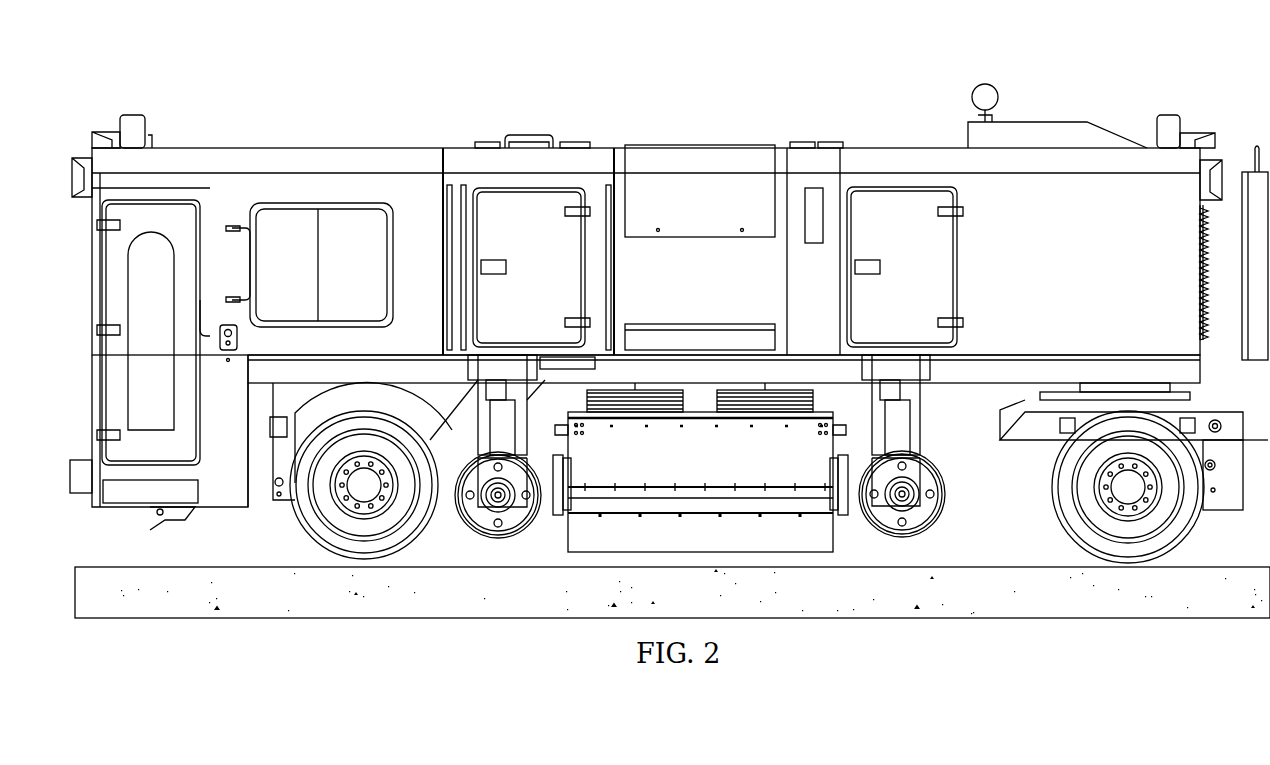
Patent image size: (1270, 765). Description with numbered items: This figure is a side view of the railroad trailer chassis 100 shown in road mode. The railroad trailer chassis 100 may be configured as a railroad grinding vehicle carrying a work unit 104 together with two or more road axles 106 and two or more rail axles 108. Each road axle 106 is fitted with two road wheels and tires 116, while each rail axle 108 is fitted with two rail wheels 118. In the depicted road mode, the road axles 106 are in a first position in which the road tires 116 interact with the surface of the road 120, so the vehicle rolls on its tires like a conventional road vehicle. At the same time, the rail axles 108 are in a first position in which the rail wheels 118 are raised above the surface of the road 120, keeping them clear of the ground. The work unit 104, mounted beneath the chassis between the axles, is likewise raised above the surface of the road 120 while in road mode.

The railroad trailer chassis 100 is at (669, 307).
The work unit 104 is at (810, 553).
The road axles 106 is at (358, 493).
The rail axles 108 is at (498, 498).
The tires 116 is at (303, 547).
The rail wheels 118 is at (488, 537).
The road 120 is at (1042, 618).